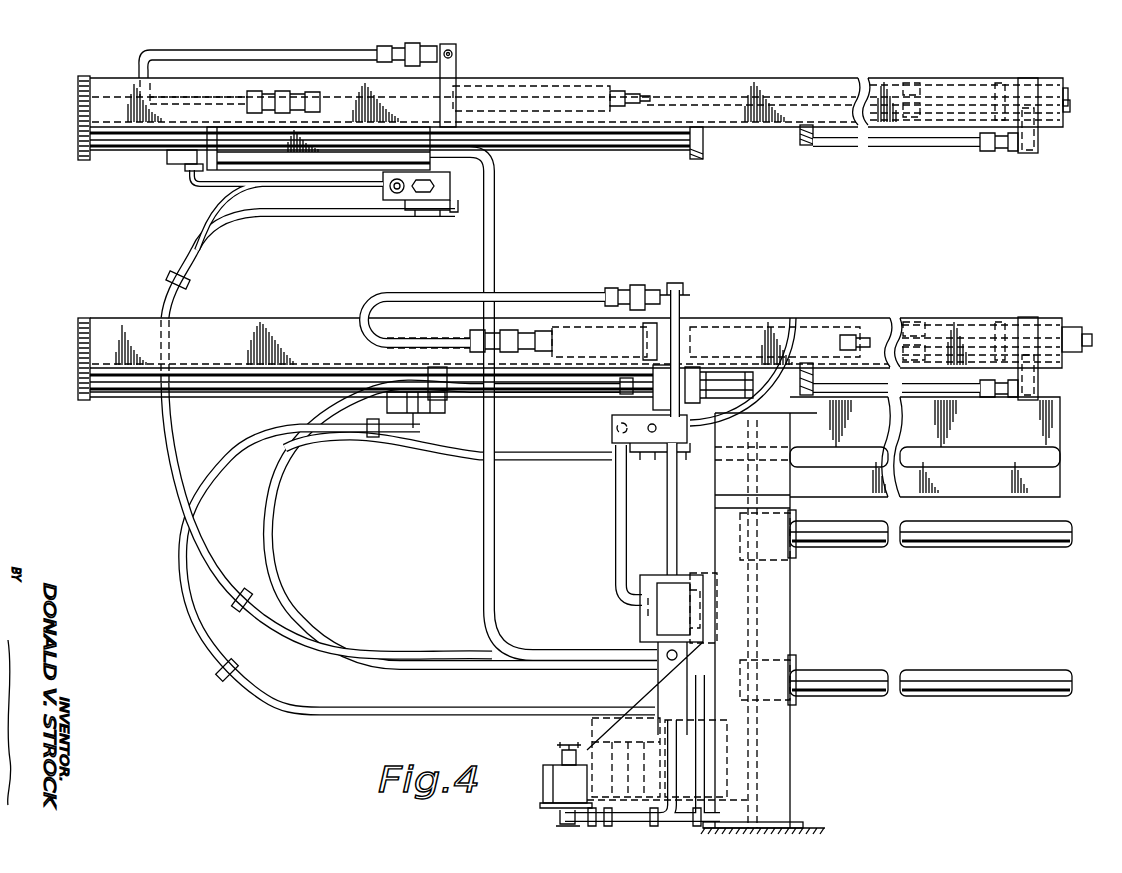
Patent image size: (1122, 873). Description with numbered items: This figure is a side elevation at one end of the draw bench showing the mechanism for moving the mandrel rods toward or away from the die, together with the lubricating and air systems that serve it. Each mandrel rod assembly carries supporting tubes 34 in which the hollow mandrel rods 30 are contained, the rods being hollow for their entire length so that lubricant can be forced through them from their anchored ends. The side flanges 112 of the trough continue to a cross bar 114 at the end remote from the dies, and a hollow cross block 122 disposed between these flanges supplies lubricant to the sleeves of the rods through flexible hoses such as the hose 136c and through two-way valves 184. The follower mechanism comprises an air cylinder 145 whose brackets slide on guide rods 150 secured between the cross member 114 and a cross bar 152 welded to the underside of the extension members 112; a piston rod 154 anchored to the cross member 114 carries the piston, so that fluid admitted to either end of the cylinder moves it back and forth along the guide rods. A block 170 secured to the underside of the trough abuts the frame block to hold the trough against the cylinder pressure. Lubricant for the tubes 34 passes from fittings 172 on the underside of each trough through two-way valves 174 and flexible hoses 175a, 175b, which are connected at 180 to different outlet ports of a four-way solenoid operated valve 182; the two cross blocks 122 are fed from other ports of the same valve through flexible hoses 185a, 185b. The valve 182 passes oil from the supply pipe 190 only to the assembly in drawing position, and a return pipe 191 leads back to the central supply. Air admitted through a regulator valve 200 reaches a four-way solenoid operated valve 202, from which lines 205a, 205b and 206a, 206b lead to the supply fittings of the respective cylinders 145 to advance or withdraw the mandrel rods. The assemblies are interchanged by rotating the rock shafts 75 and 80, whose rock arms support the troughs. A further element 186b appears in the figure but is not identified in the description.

The mandrel rod 30 is at (1066, 90).
The supporting tube 34 is at (1068, 102).
The rock shaft 75 is at (976, 540).
The rock shaft 80 is at (986, 700).
The side flanges 112 is at (665, 82).
The cross bar 114 is at (78, 130).
The cross block 122 is at (458, 60).
The flexible hose 136c is at (540, 292).
The air cylinder 145 is at (393, 150).
The guide rod 150 is at (112, 150).
The cross bar 152 is at (698, 160).
The piston rod 154 is at (152, 164).
The block 170 is at (805, 147).
The fitting 172 is at (1030, 155).
The two way valve 174 is at (998, 152).
The flexible hose 175a is at (846, 148).
The flexible hose 175b is at (966, 396).
The hose connection 180 is at (652, 650).
The four-way solenoid operated valve 182 is at (641, 612).
The two way valve 184 is at (400, 61).
The flexible hose 185a is at (386, 212).
The flexible hose 185b is at (540, 465).
The conduit 186b is at (681, 313).
The supply pipe 190 is at (674, 526).
The return pipe 191 is at (966, 455).
The regulator valve 200 is at (613, 722).
The four-way solenoid operated valve 202 is at (545, 788).
The air line 205a is at (190, 184).
The air line 205b is at (406, 440).
The air line 206a is at (497, 170).
The air line 206b is at (789, 320).